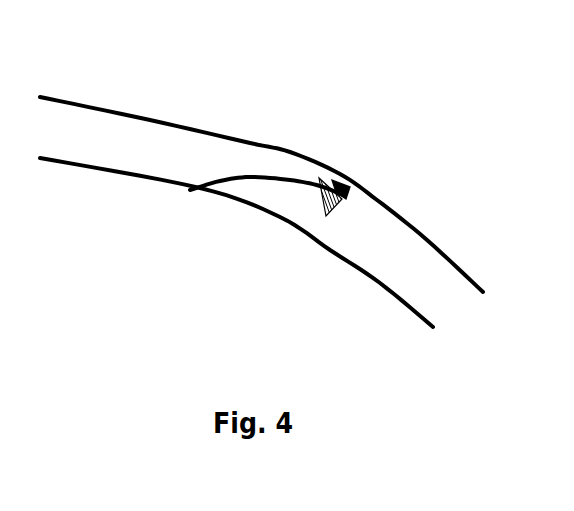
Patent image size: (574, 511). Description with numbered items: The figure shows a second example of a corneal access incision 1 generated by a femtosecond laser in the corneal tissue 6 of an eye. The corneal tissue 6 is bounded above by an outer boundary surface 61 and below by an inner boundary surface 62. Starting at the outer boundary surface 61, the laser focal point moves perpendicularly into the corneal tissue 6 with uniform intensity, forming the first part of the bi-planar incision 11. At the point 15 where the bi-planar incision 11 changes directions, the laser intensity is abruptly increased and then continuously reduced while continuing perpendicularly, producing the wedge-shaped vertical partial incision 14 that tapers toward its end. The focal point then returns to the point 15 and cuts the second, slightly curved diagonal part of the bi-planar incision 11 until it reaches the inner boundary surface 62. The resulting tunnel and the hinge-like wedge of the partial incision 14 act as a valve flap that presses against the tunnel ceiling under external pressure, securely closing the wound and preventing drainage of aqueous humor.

The corneal access incision 1 is at (388, 141).
The corneal tissue 6 is at (282, 181).
The outer boundary surface 61 is at (206, 115).
The inner boundary surface 62 is at (109, 184).
The bi-planar incision 11 is at (233, 192).
The wedge-shaped vertical partial incision 14 is at (318, 167).
The point where the bi-planar incision changes directions 15 is at (359, 198).